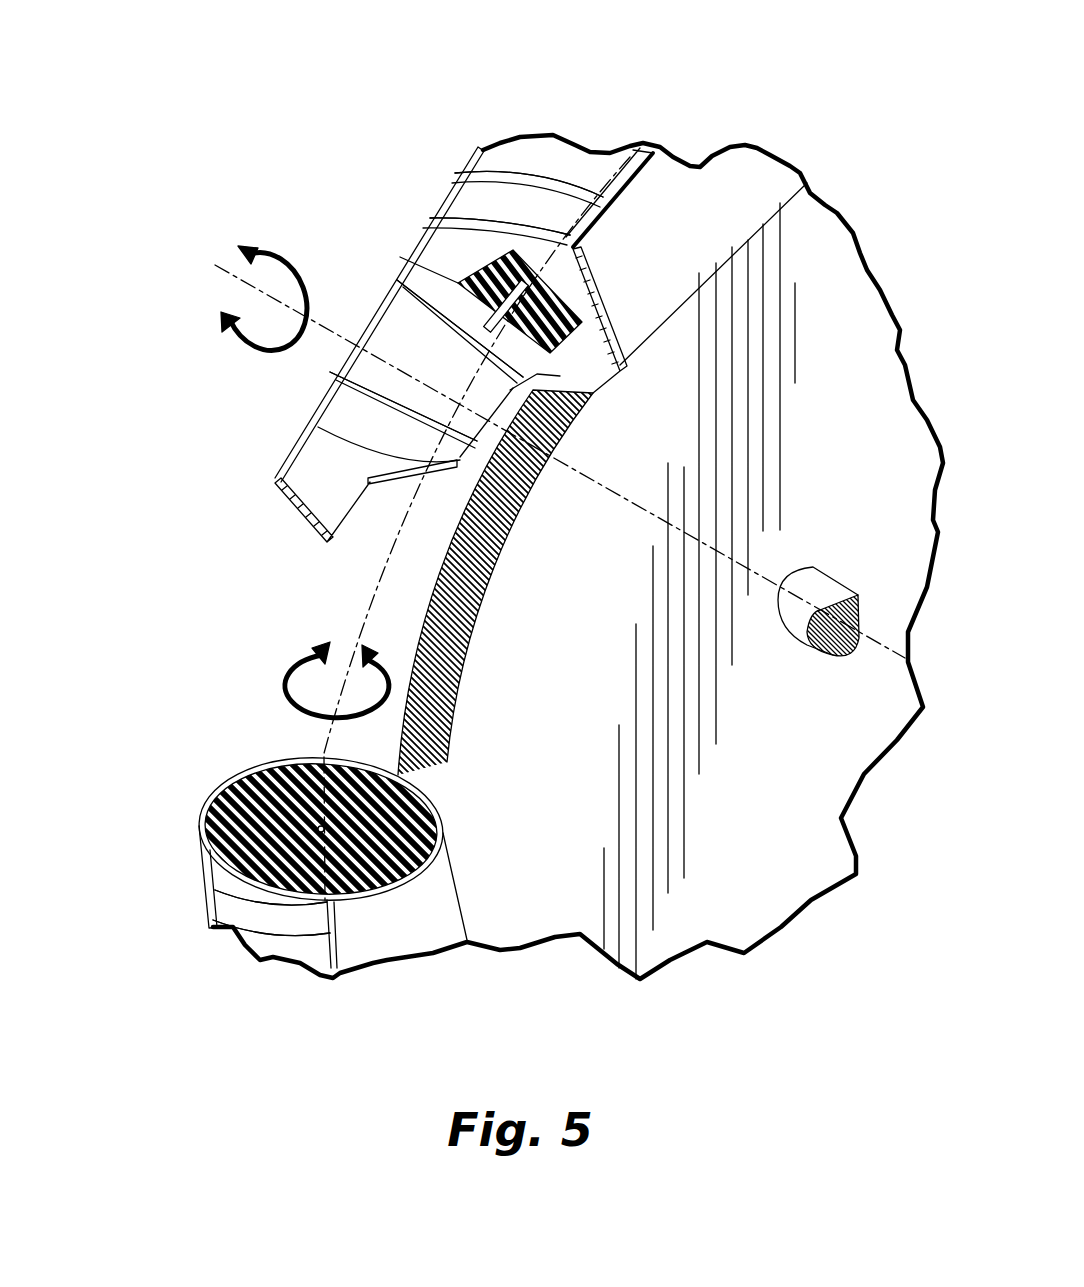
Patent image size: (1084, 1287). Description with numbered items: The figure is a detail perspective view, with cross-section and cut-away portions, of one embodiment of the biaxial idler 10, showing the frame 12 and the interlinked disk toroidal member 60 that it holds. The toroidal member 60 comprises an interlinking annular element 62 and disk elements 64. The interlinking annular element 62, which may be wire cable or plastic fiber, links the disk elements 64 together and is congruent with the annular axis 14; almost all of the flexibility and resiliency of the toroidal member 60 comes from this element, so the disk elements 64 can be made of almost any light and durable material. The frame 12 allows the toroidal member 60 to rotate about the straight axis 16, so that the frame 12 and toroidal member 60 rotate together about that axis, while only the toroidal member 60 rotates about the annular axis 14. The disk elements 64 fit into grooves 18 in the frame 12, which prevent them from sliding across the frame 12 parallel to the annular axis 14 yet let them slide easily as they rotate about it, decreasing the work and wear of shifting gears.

The biaxial idler 10 is at (183, 645).
The frame 12 is at (380, 287).
The annular axis 14 is at (327, 735).
The straight axis 16 is at (320, 327).
The grooves 18 is at (335, 422).
The interlinked disk toroidal member 60 is at (552, 178).
The interlinking annular element 62 is at (515, 277).
The disk elements 64 is at (467, 207).